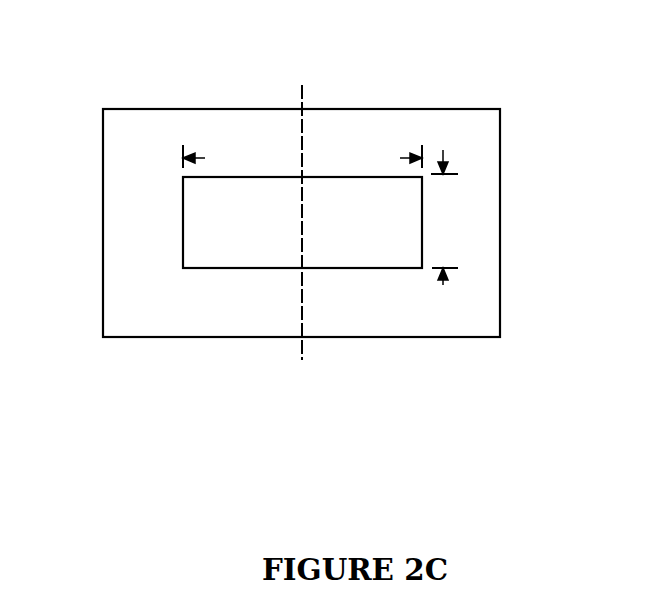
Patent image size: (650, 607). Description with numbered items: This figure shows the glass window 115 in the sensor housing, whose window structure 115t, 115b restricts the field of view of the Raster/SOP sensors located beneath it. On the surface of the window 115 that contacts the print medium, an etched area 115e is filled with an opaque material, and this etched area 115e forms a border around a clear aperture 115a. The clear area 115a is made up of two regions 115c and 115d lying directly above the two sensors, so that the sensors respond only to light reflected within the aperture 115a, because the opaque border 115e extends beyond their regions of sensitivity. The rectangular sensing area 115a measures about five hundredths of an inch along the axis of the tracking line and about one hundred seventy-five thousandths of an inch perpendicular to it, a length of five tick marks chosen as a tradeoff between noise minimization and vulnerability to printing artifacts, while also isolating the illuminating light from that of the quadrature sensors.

The window 115 is at (473, 108).
The aperture 115a is at (422, 275).
The window structure 115b is at (467, 79).
The region 115c is at (213, 232).
The region 115d is at (377, 243).
The etched area 115e is at (478, 188).
The window structure 115t is at (293, 79).